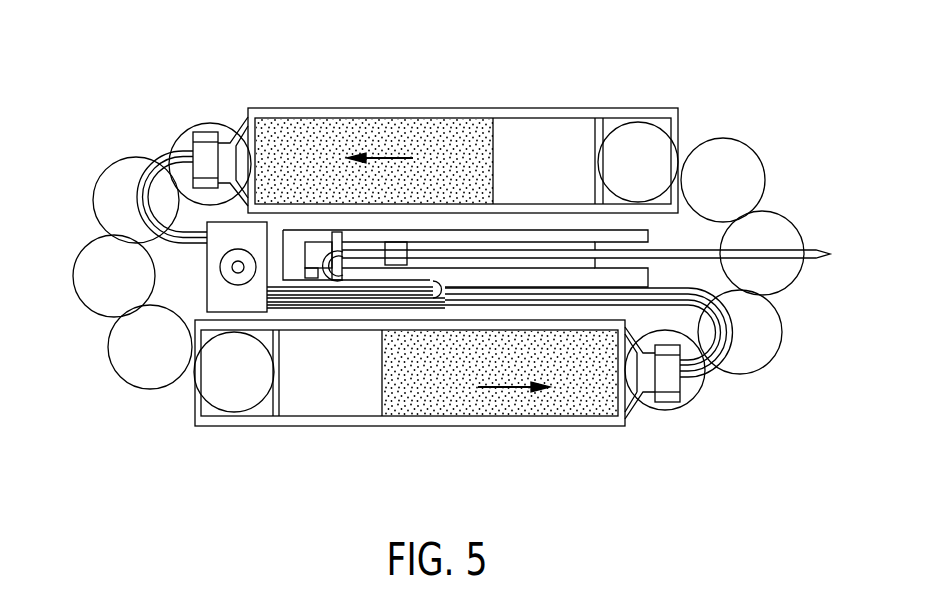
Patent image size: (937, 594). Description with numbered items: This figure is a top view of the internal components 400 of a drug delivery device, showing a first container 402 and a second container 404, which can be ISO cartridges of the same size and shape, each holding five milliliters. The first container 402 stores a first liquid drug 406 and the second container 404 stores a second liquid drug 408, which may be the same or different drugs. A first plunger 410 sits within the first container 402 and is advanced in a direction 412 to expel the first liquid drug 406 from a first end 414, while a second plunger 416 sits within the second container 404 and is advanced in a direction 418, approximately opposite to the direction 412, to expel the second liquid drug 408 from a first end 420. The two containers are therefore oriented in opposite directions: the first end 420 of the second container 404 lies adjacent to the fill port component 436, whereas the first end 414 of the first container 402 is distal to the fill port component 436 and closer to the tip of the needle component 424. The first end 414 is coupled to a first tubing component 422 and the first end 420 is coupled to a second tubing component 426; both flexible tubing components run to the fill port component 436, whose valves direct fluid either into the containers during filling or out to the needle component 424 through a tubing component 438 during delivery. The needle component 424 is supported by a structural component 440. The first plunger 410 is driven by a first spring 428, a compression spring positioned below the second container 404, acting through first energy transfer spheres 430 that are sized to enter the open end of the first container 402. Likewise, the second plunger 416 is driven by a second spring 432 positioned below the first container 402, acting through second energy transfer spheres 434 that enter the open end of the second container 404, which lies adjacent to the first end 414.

The internal components 400 is at (132, 88).
The first container 402 is at (400, 417).
The second container 404 is at (443, 110).
The first liquid drug 406 is at (580, 407).
The second liquid drug 408 is at (330, 127).
The first plunger 410 is at (352, 403).
The direction 412 is at (510, 392).
The first end 414 is at (665, 393).
The second plunger 416 is at (555, 128).
The direction 418 is at (393, 157).
The first end 420 is at (210, 140).
The first tubing component 422 is at (710, 367).
The needle component 424 is at (815, 247).
The second tubing component 426 is at (150, 184).
The first spring 428 is at (210, 412).
The first energy transfer spheres 430 is at (83, 278).
The second spring 432 is at (678, 113).
The second energy transfer spheres 434 is at (763, 332).
The fill port component 436 is at (225, 298).
The tubing component 438 is at (348, 296).
The structural component 440 is at (297, 240).